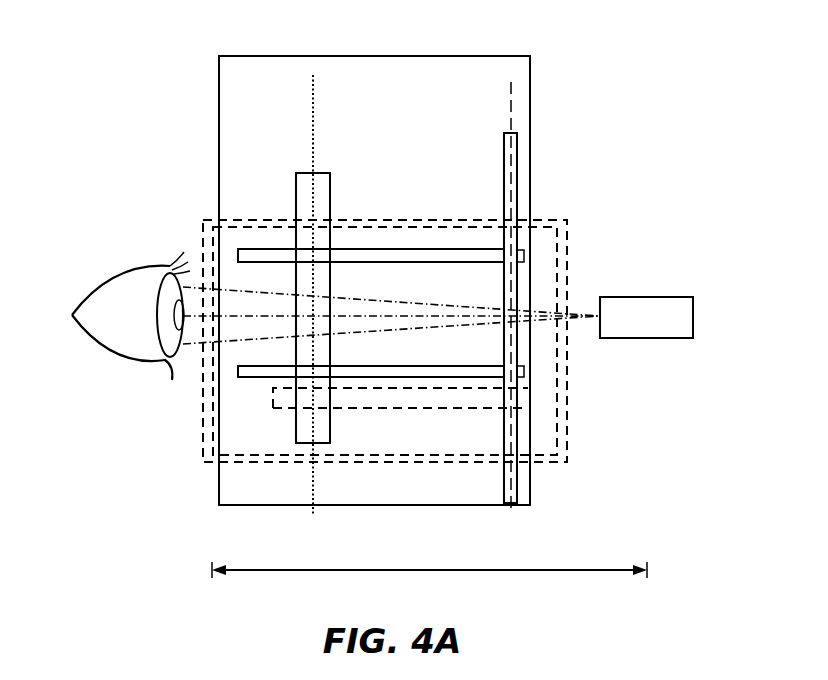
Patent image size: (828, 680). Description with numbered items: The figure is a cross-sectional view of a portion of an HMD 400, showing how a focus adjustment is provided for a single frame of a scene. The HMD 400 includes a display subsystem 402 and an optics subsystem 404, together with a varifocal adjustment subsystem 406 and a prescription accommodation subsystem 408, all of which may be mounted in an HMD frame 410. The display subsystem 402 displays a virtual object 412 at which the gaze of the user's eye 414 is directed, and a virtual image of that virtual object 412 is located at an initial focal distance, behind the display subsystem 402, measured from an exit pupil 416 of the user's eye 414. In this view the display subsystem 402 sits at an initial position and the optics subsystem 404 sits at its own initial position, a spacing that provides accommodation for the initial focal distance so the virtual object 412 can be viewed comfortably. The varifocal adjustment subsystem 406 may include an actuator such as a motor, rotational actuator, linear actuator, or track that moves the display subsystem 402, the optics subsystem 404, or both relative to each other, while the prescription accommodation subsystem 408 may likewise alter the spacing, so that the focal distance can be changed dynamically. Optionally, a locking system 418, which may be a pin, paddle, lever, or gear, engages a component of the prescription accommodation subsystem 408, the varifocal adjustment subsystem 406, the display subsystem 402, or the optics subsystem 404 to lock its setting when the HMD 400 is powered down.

The HMD 400 is at (124, 70).
The display subsystem 402 is at (517, 157).
The optics subsystem 404 is at (318, 172).
The varifocal adjustment subsystem 406 is at (233, 225).
The prescription accommodation subsystem 408 is at (385, 220).
The HMD frame 410 is at (530, 92).
The virtual object 412 is at (647, 297).
The user's eye 414 is at (118, 282).
The exit pupil 416 is at (182, 224).
The locking system 418 is at (272, 402).